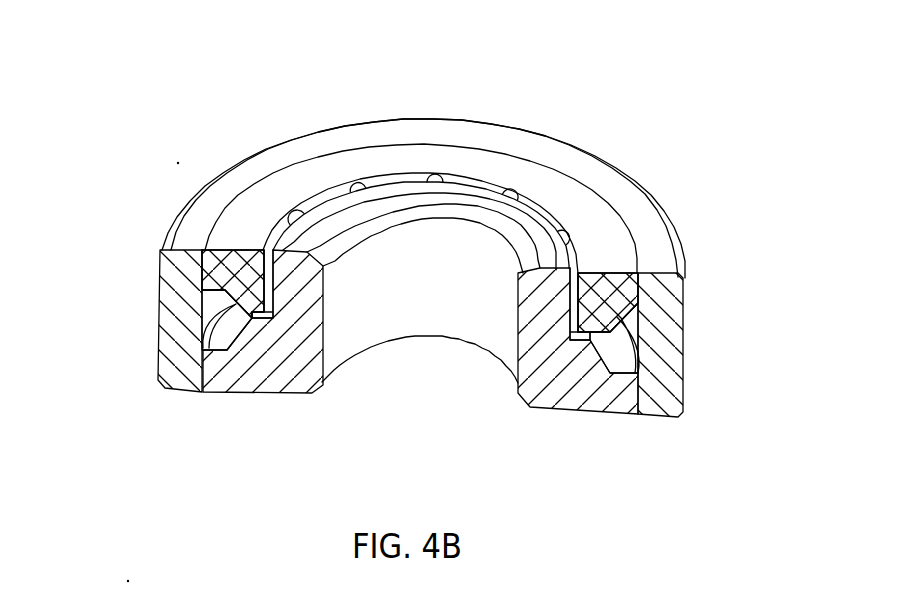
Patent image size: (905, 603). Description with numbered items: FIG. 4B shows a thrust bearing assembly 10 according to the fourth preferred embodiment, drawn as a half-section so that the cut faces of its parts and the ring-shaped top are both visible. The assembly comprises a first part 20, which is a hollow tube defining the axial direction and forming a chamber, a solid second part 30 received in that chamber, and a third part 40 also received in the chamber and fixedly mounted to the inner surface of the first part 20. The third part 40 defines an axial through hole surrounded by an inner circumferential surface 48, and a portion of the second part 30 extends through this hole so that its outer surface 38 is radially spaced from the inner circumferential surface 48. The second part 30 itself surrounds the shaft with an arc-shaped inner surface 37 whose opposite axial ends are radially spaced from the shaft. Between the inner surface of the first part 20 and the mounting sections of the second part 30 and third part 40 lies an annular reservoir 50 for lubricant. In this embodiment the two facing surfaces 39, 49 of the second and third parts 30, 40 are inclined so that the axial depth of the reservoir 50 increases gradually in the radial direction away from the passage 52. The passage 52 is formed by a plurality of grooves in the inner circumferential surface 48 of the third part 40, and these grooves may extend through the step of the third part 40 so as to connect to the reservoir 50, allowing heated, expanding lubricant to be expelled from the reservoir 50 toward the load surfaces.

The thrust bearing assembly 10 is at (213, 98).
The first part 20 is at (670, 305).
The second part 30 is at (563, 384).
The inner surface 37 is at (353, 325).
The outer surface 38 is at (517, 323).
The facing surface 39 is at (640, 359).
The third part 40 is at (580, 213).
The inner circumferential surface 48 is at (211, 250).
The facing surface 49 is at (607, 357).
The annular reservoir 50 is at (213, 308).
The passage 52 is at (297, 216).